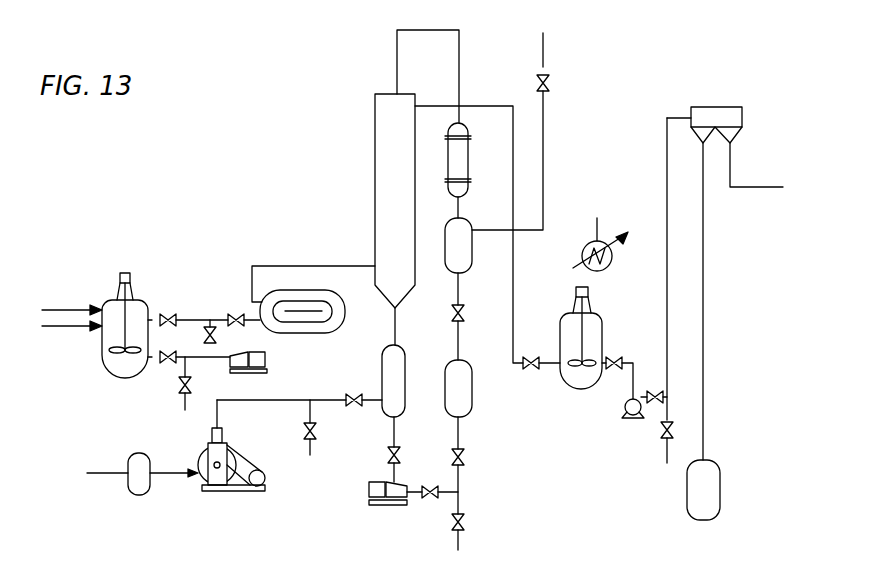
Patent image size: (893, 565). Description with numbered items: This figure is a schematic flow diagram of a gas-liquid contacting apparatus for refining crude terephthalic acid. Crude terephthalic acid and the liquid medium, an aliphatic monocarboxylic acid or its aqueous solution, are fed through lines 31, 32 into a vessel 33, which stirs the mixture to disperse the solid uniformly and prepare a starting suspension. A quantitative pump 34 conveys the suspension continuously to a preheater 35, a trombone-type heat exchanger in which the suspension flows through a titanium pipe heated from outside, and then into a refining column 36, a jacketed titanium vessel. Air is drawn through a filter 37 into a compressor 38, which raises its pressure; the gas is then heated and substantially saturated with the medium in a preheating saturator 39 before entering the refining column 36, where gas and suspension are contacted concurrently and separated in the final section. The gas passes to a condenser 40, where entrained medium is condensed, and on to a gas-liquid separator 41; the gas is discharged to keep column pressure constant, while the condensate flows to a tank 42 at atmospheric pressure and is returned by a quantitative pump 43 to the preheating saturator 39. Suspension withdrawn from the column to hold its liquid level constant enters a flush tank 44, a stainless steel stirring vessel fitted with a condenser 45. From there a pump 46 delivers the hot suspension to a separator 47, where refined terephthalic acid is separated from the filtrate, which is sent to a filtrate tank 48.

The line 31 is at (50, 352).
The line 32 is at (58, 348).
The vessel 33 is at (148, 298).
The quantitative pump 34 is at (267, 360).
The preheater 35 is at (310, 335).
The refining column 36 is at (375, 171).
The filter 37 is at (128, 496).
The compressor 38 is at (243, 491).
The preheating saturator 39 is at (405, 368).
The condenser 40 is at (468, 165).
The gas-liquid separator 41 is at (472, 248).
The tank 42 is at (472, 395).
The quantitative pump 43 is at (384, 510).
The flush tank 44 is at (575, 392).
The condenser 45 is at (612, 262).
The pump 46 is at (624, 414).
The separator 47 is at (744, 118).
The filtrate tank 48 is at (721, 490).